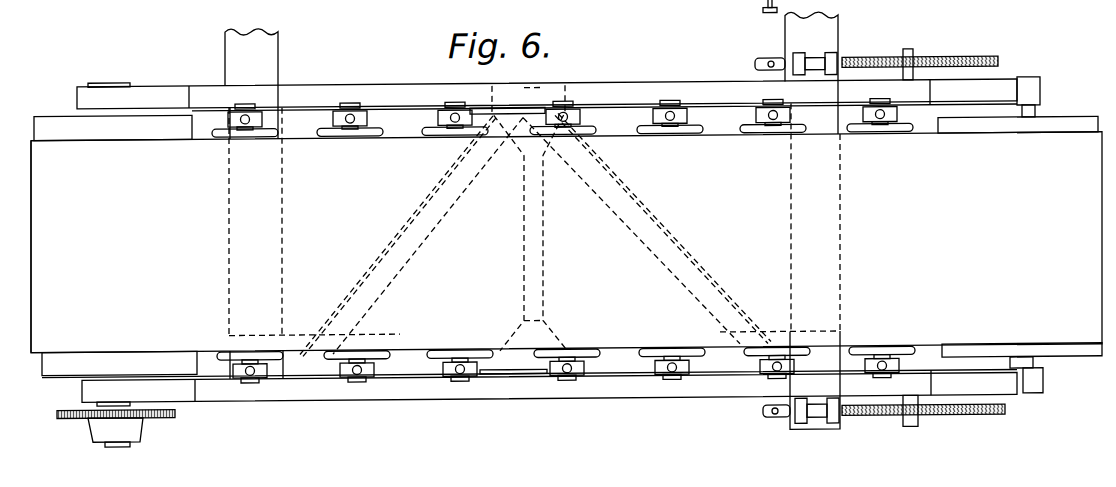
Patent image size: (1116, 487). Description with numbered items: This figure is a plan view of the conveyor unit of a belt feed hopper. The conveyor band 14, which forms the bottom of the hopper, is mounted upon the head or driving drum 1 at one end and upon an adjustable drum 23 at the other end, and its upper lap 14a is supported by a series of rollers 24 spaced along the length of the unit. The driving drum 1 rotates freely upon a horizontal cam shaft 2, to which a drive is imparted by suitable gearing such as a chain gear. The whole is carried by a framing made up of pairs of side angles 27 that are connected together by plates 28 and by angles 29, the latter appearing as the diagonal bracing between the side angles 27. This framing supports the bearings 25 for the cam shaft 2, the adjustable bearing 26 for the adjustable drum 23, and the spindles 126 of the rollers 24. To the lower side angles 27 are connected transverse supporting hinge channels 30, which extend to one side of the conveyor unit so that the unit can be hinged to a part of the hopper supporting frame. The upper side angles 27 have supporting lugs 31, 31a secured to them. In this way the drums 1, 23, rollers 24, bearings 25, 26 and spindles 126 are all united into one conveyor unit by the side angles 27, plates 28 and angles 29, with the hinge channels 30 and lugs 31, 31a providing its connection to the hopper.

The head or driving drum 1 is at (60, 364).
The cam shaft 2 is at (130, 447).
The conveyor band 14 is at (33, 267).
The upper lap 14a is at (137, 250).
The adjustable drum 23 is at (1045, 361).
The rollers 24 is at (770, 140).
The bearings 25 is at (85, 104).
The adjustable bearing 26 is at (1030, 97).
The side angles 27 is at (405, 95).
The plates 28 is at (535, 112).
The angles 29 is at (527, 244).
The hinge channels 30 is at (260, 44).
The supporting lugs 31 is at (197, 404).
The supporting lugs 31a is at (188, 99).
The spindles 126 is at (770, 106).